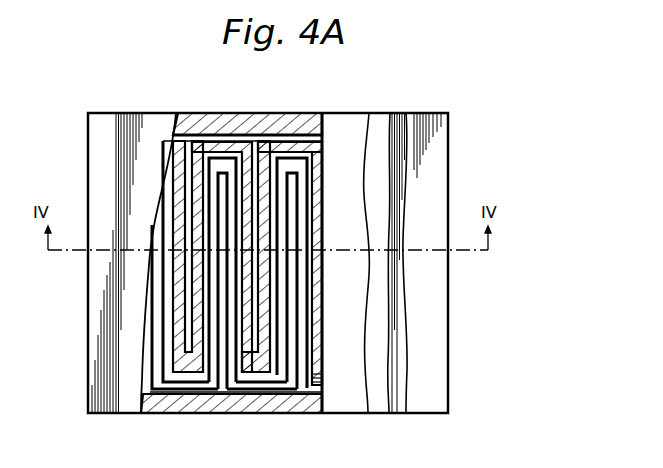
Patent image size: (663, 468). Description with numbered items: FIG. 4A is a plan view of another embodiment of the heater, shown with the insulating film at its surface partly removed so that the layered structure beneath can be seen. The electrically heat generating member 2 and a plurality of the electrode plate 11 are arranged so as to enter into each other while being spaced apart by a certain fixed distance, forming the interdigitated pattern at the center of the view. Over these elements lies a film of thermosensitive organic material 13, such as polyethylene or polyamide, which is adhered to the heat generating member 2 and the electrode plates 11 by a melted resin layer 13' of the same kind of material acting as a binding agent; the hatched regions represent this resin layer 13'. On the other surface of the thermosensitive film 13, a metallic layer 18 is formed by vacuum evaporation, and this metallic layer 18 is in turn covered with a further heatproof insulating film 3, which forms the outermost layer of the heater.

The electrically heat generating member 2 is at (209, 143).
The electrode plate 11 is at (240, 148).
The melted resin layer 13' is at (231, 262).
The thermosensitive film 13 is at (352, 244).
The metallic layer 18 is at (388, 124).
The heatproof insulating film 3 is at (430, 124).